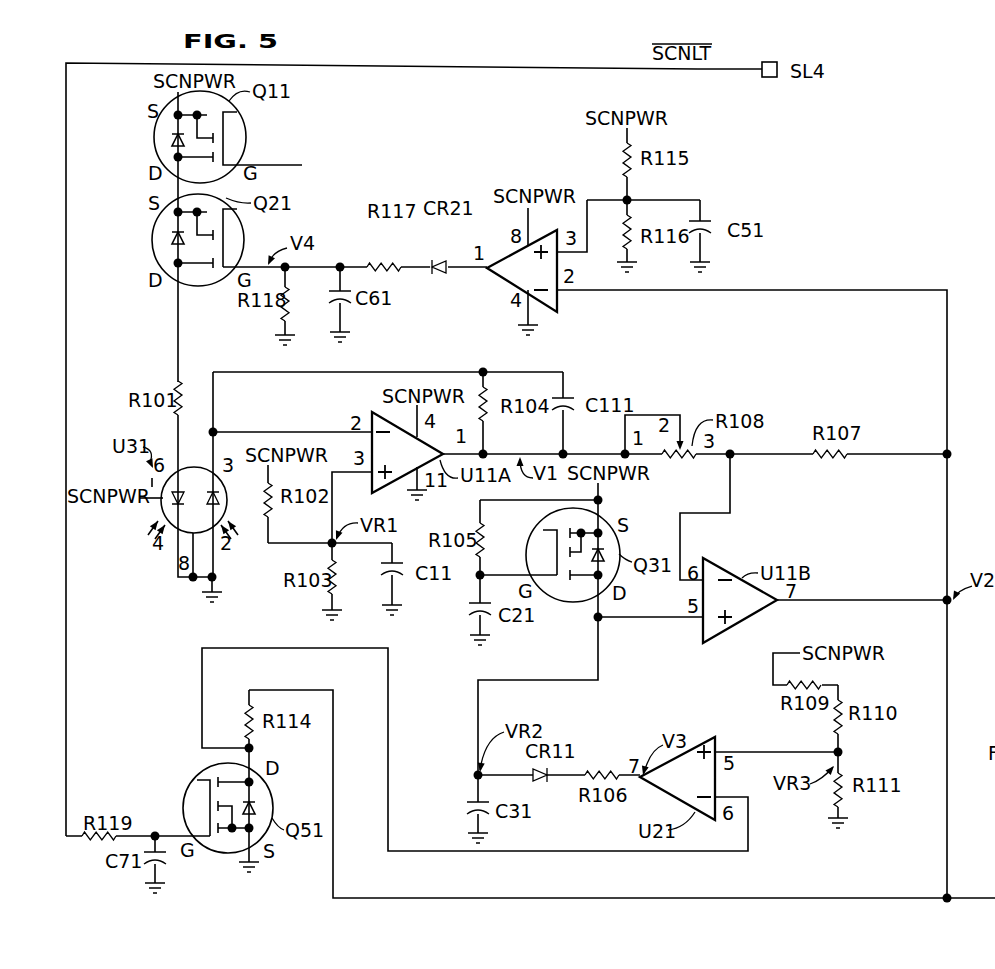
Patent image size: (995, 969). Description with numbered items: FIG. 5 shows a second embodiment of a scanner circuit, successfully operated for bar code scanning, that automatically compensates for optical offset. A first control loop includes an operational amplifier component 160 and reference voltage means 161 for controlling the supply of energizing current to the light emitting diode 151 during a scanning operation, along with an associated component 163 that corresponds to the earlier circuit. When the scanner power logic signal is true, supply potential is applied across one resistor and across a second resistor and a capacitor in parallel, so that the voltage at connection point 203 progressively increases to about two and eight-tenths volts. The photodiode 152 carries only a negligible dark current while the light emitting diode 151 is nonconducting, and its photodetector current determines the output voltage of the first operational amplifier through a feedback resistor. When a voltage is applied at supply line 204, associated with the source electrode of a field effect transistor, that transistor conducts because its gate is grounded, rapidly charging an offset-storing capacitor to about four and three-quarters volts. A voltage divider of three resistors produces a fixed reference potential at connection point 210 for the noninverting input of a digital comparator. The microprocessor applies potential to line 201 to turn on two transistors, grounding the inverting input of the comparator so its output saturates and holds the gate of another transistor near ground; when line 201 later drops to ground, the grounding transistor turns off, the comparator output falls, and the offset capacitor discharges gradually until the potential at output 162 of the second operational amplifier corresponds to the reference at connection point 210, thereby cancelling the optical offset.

The line 201 is at (698, 70).
The component 160 is at (548, 228).
The component 163 is at (622, 195).
The reference voltage means 161 is at (677, 192).
The light emitting diode 151 is at (163, 498).
The photodiode 152 is at (227, 503).
The connection point 203 is at (330, 548).
The supply line 204 is at (604, 488).
The output 162 is at (888, 578).
The connection point 210 is at (846, 747).